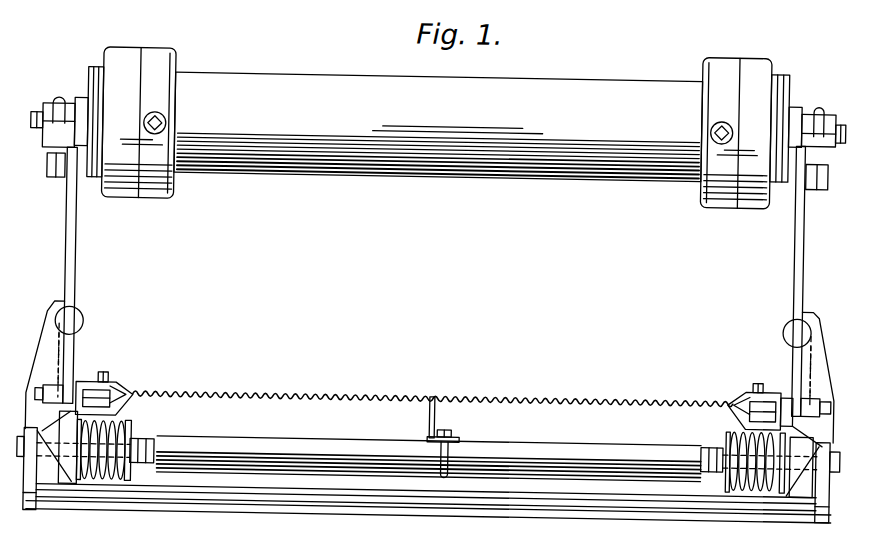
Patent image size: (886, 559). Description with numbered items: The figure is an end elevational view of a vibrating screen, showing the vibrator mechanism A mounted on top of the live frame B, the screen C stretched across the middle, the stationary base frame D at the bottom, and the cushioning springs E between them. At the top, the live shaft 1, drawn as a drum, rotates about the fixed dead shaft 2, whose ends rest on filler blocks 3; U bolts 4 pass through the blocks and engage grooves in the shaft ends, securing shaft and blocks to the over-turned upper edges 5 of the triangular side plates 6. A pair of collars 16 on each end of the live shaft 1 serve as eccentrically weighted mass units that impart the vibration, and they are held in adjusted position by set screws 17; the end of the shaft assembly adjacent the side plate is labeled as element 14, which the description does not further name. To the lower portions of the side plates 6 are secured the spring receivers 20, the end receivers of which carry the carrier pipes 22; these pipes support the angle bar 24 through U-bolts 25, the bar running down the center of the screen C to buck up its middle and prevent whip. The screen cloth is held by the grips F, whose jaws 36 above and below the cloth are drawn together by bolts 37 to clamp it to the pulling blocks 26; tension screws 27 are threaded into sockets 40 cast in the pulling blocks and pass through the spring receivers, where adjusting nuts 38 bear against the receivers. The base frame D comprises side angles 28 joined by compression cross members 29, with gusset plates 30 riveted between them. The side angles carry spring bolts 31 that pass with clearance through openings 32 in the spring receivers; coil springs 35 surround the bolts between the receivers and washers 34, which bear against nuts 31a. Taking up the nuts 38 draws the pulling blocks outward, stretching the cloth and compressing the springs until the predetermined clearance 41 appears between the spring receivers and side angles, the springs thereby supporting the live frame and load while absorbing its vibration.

The live shaft 1 is at (645, 77).
The dead shaft 2 is at (36, 119).
The filler block 3 is at (815, 142).
The U bolt 4 is at (56, 104).
The over-turned upper edge 5 is at (53, 184).
The side plate 6 is at (794, 253).
The shaft collar 14 is at (75, 129).
The collar 16 is at (143, 54).
The set screw 17 is at (165, 126).
The spring receiver 20 is at (62, 396).
The carrier pipe 22 is at (565, 441).
The angle bar 24 is at (438, 418).
The U-bolt 25 is at (451, 449).
The pulling block 26 is at (752, 410).
The tension screw 27 is at (787, 392).
The side angle 28 is at (822, 517).
The compression cross member 29 is at (650, 497).
The gusset plate 30 is at (802, 515).
The spring bolt 31 is at (157, 448).
The nut 31a is at (140, 468).
The opening 32 is at (40, 480).
The washer 34 is at (136, 438).
The coil spring 35 is at (103, 486).
The jaw 36 is at (135, 398).
The bolt 37 is at (110, 380).
The adjusting nut 38 is at (72, 368).
The socket 40 is at (95, 388).
The clearance 41 is at (46, 335).
The vibrator mechanism A is at (244, 76).
The live frame B is at (794, 278).
The screen C is at (598, 397).
The base frame D is at (773, 516).
The cushioning springs E is at (108, 491).
The grip F is at (757, 387).